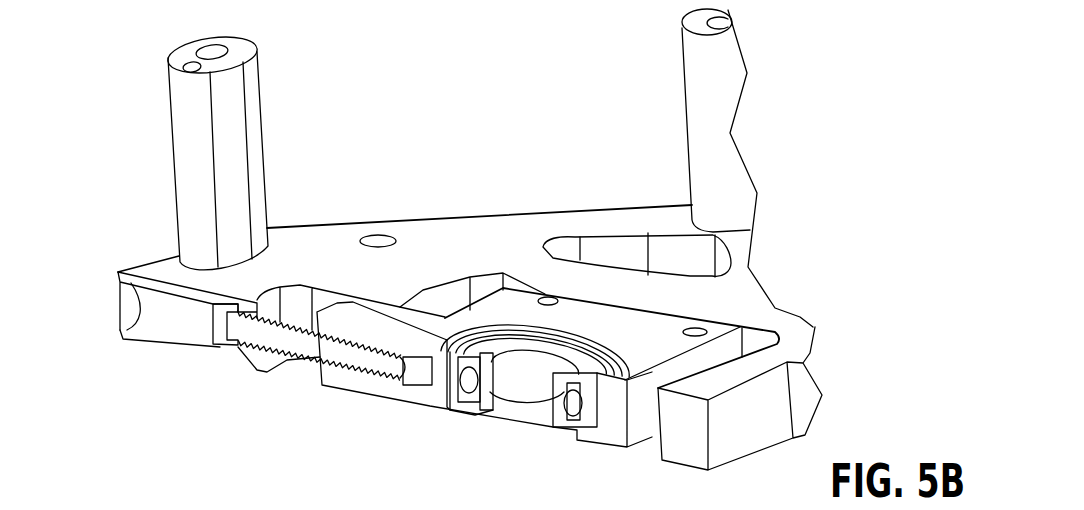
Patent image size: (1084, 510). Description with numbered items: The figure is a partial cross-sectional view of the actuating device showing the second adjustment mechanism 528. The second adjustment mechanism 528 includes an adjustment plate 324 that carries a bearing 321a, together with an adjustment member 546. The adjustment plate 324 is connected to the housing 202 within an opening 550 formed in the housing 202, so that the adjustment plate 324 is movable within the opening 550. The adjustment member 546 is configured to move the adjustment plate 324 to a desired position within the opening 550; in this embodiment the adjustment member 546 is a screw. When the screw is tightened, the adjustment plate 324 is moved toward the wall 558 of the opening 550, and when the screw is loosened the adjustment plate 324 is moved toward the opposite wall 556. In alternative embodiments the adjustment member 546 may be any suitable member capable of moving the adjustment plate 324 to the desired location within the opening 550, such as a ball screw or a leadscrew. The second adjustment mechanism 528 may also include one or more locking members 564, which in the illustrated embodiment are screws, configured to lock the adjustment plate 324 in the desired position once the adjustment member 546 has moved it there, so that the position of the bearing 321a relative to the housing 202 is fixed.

The housing 202 is at (156, 268).
The wall 558 is at (423, 297).
The opening 550 is at (462, 290).
The adjustment plate 324 is at (582, 313).
The wall 556 is at (723, 366).
The bearing 321a is at (567, 398).
The second adjustment mechanism 528 is at (293, 417).
The adjustment member 546 is at (268, 338).
The locking members 564 is at (511, 433).